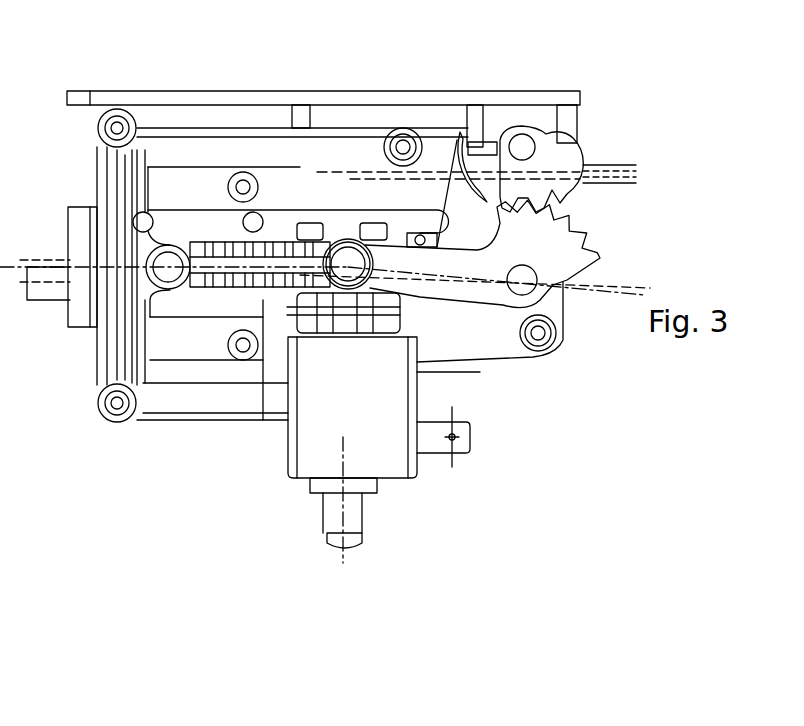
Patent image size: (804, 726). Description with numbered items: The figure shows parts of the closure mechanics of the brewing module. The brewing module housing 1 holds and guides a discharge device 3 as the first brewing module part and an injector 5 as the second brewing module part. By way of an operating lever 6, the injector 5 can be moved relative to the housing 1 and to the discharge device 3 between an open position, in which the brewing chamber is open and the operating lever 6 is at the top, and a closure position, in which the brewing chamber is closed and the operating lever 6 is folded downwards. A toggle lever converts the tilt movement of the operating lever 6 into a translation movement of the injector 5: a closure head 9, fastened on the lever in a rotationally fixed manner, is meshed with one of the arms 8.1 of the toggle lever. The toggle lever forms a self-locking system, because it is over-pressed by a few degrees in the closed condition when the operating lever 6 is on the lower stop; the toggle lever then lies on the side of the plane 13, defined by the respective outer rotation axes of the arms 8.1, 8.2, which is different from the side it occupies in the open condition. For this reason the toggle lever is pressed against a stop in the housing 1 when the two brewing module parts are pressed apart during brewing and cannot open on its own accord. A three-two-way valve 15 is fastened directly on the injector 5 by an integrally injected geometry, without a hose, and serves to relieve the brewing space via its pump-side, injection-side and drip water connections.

The brewing module housing 1 is at (360, 177).
The discharge device 3 is at (82, 297).
The injector 5 is at (183, 207).
The operating lever 6 is at (185, 100).
The arm of the toggle lever 8.1 is at (435, 283).
The arm of the toggle lever 8.2 is at (298, 282).
The closure head 9 is at (555, 163).
The plane 13 is at (607, 283).
The 3/2-way valve 15 is at (360, 382).